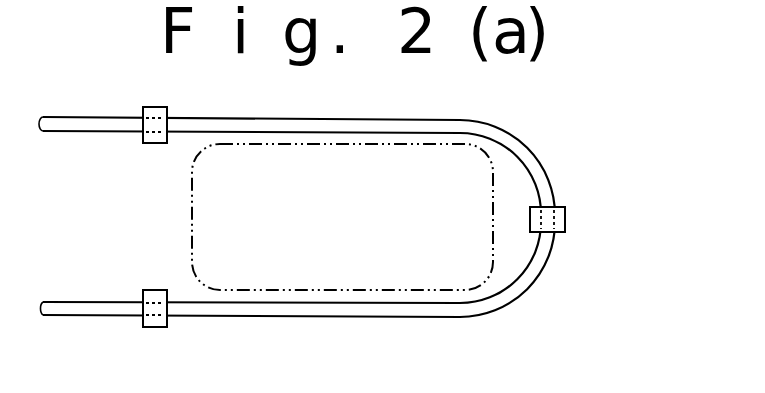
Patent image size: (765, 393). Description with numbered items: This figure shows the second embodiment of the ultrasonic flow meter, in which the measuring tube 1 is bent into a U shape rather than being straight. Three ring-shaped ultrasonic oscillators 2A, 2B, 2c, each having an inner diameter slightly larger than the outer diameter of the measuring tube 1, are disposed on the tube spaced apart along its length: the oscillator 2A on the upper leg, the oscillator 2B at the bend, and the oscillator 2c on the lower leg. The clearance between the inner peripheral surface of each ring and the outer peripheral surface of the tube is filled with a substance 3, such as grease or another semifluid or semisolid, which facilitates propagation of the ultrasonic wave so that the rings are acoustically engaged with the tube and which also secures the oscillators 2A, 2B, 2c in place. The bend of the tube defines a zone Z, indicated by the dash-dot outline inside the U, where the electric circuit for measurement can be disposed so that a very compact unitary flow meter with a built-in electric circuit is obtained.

The measuring tube 1 is at (545, 162).
The ultrasonic oscillator 2A is at (166, 108).
The ultrasonic oscillator 2B is at (567, 225).
The ultrasonic oscillator 2c is at (168, 318).
The substance 3 is at (142, 132).
The zone Z is at (447, 272).